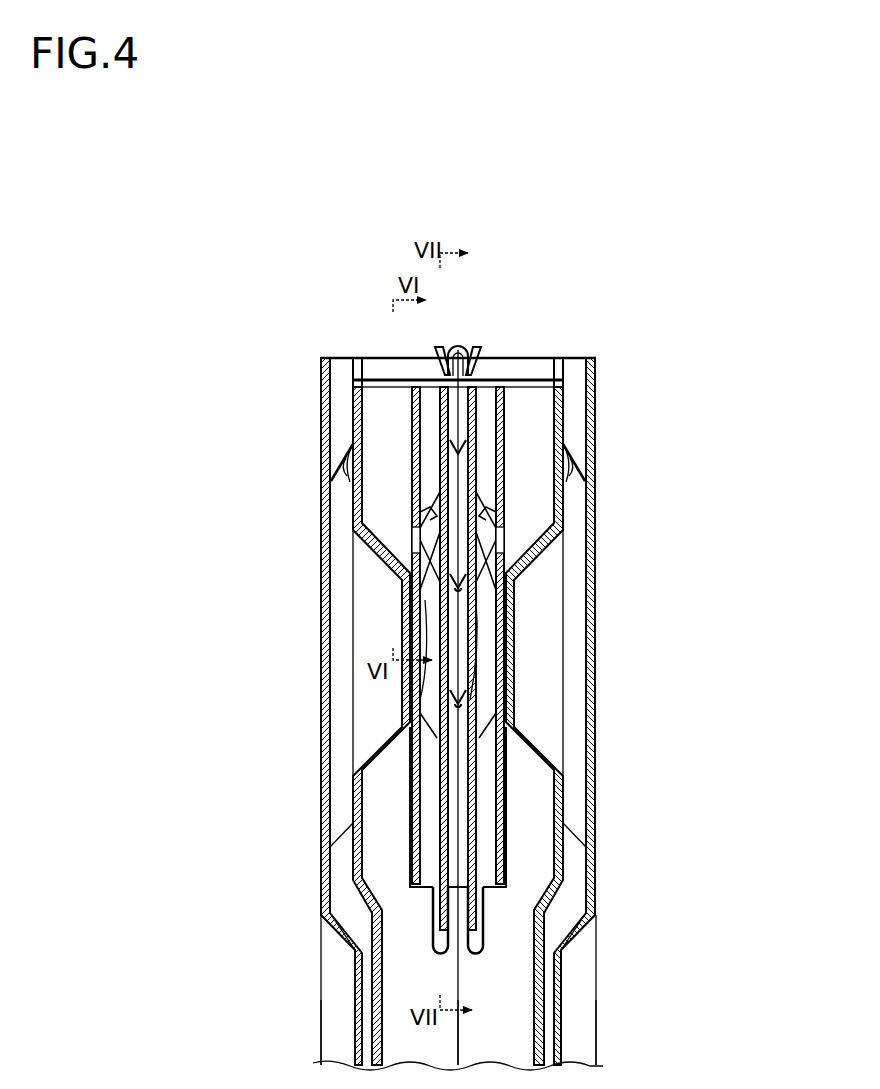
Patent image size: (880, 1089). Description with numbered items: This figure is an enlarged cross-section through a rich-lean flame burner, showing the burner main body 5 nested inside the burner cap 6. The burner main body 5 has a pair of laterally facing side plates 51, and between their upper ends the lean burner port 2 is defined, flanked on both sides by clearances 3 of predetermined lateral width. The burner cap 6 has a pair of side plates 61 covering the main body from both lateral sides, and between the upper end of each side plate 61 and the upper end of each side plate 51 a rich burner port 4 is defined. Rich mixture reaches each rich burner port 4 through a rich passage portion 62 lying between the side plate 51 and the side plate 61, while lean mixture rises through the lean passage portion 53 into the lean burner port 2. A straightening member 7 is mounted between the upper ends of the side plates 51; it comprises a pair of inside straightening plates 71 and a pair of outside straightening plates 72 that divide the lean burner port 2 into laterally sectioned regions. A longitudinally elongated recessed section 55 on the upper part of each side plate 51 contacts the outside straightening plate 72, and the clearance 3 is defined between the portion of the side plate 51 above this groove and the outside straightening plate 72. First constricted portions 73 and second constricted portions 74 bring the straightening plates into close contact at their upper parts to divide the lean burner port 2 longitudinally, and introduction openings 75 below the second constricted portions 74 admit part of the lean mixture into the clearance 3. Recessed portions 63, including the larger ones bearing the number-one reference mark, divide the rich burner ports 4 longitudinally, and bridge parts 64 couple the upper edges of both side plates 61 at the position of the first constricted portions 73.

The lean burner port 2 is at (459, 372).
The clearance 3 is at (378, 395).
The rich burner port 4 is at (341, 410).
The burner main body 5 is at (571, 851).
The burner cap 6 is at (604, 776).
The straightening member 7 is at (457, 670).
The side plate 51 is at (353, 872).
The lean passage portion 53 is at (514, 1005).
The recessed section 55 is at (402, 688).
The side plate 61 is at (330, 824).
The rich passage portion 62 is at (356, 918).
The recessed portion 63 is at (335, 478).
The bridge part 64 is at (513, 378).
The inside straightening plate 71 is at (410, 432).
The outside straightening plate 72 is at (406, 448).
The first constricted portion 73 is at (425, 600).
The second constricted portion 74 is at (420, 513).
The introduction opening 75 is at (412, 548).